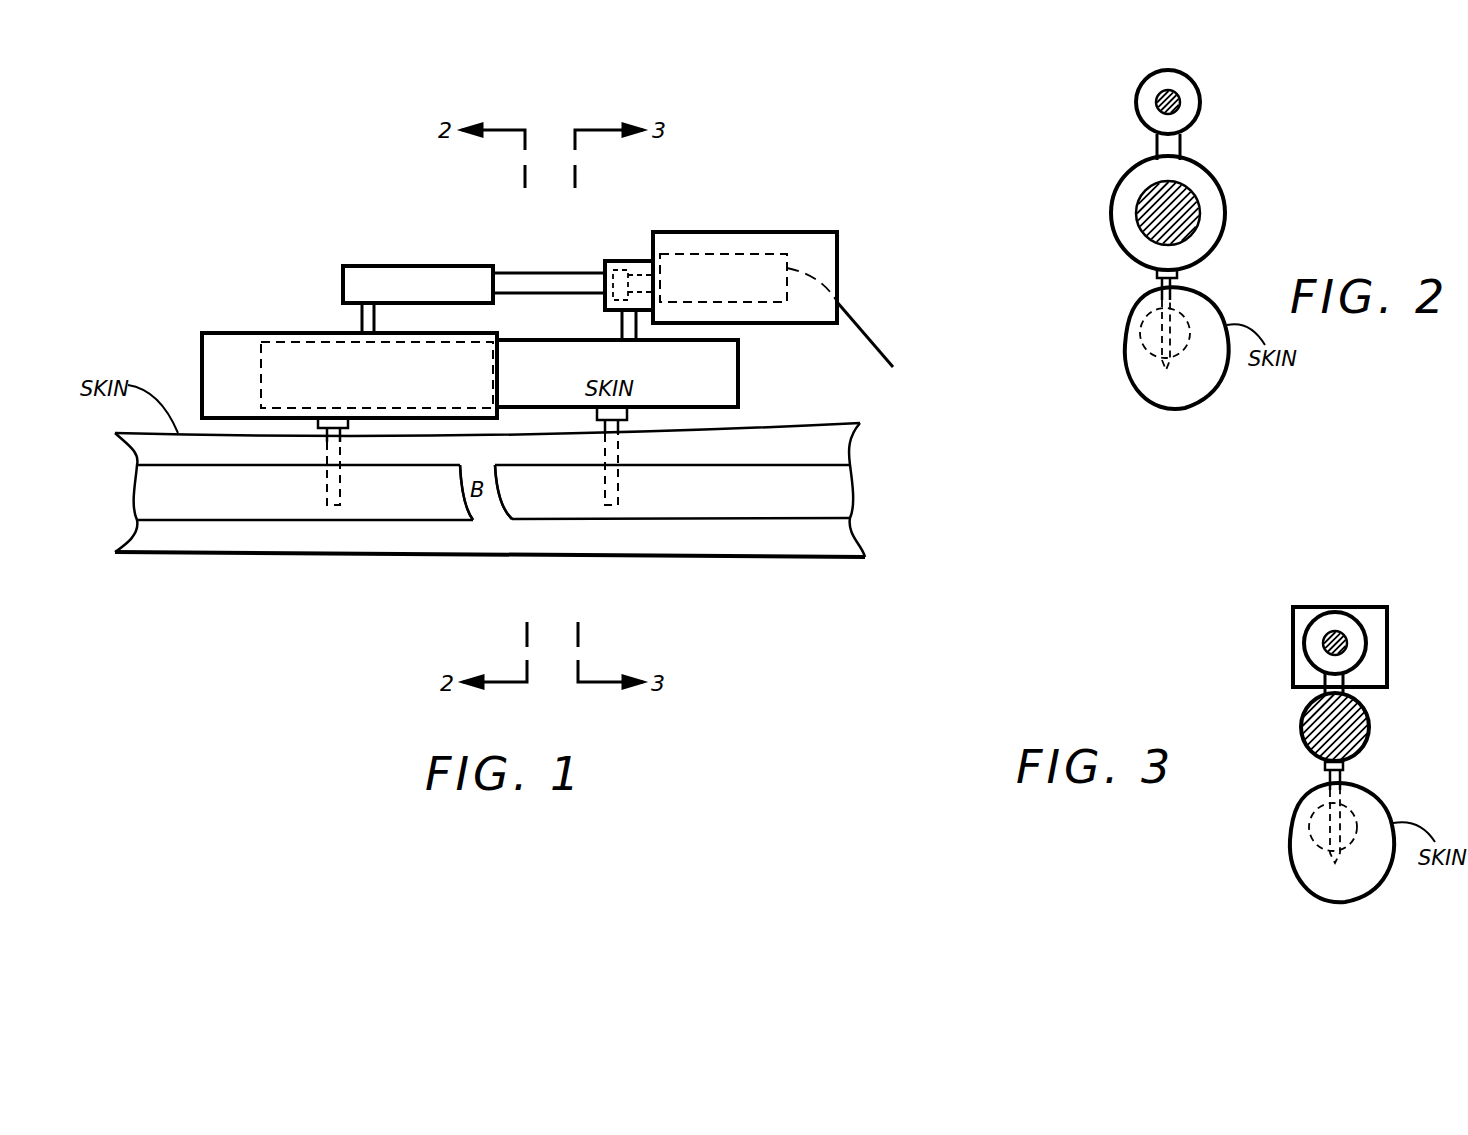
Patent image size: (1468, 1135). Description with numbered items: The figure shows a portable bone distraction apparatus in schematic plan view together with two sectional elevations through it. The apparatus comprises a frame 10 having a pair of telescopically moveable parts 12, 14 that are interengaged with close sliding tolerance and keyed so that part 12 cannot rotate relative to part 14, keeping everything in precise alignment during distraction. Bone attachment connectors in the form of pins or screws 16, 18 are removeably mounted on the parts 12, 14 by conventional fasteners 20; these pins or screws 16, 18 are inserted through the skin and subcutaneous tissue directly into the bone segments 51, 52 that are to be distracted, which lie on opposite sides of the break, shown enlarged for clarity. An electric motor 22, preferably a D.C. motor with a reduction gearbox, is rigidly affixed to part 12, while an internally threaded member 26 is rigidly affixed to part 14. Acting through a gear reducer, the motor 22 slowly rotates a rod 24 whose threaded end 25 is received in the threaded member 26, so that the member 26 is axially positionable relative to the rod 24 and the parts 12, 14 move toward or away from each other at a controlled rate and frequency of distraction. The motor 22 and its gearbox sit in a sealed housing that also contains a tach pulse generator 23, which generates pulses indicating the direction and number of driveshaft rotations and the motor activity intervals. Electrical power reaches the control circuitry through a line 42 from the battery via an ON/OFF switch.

In FIG. 1, the frame 10 is at (264, 270).
In FIG. 1, the telescopically moveable part 12 is at (738, 383).
In FIG. 2, the telescopically moveable part 12 is at (1200, 205).
In FIG. 3, the telescopically moveable part 12 is at (1370, 741).
In FIG. 1, the telescopically moveable part 14 is at (270, 333).
In FIG. 2, the telescopically moveable part 14 is at (1225, 240).
In FIG. 1, the bone attachment pin or screw 16 is at (327, 487).
In FIG. 2, the bone attachment pin or screw 16 is at (1160, 288).
In FIG. 1, the bone attachment pin or screw 18 is at (618, 486).
In FIG. 3, the bone attachment pin or screw 18 is at (1330, 785).
In FIG. 1, the fastener 20 is at (318, 425).
In FIG. 2, the fastener 20 is at (1157, 273).
In FIG. 3, the fastener 20 is at (1325, 764).
In FIG. 1, the electric motor 22 is at (750, 255).
In FIG. 1, the tach pulse generator 23 is at (740, 232).
In FIG. 3, the tach pulse generator 23 is at (1293, 652).
In FIG. 1, the rod 24 is at (578, 273).
In FIG. 2, the rod 24 is at (1180, 104).
In FIG. 3, the rod 24 is at (1345, 647).
In FIG. 1, the threaded end 25 is at (542, 273).
In FIG. 1, the internally threaded member 26 is at (374, 266).
In FIG. 2, the internally threaded member 26 is at (1185, 80).
In FIG. 3, the internally threaded member 26 is at (1350, 618).
In FIG. 1, the line 42 is at (870, 335).
In FIG. 1, the bone segment 51 is at (416, 504).
In FIG. 2, the bone segment 51 is at (1140, 325).
In FIG. 1, the bone segment 52 is at (744, 502).
In FIG. 3, the bone segment 52 is at (1308, 828).